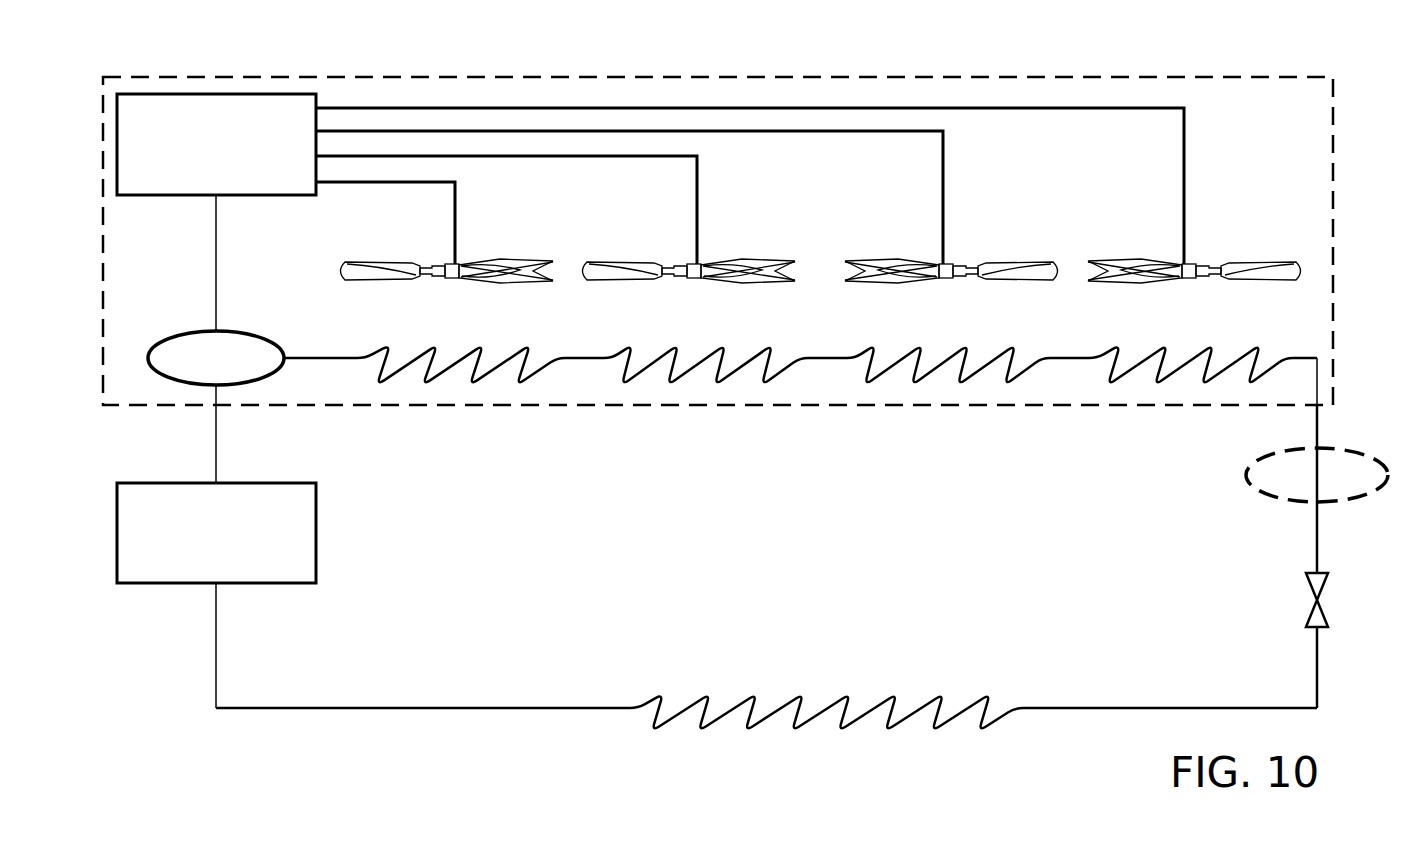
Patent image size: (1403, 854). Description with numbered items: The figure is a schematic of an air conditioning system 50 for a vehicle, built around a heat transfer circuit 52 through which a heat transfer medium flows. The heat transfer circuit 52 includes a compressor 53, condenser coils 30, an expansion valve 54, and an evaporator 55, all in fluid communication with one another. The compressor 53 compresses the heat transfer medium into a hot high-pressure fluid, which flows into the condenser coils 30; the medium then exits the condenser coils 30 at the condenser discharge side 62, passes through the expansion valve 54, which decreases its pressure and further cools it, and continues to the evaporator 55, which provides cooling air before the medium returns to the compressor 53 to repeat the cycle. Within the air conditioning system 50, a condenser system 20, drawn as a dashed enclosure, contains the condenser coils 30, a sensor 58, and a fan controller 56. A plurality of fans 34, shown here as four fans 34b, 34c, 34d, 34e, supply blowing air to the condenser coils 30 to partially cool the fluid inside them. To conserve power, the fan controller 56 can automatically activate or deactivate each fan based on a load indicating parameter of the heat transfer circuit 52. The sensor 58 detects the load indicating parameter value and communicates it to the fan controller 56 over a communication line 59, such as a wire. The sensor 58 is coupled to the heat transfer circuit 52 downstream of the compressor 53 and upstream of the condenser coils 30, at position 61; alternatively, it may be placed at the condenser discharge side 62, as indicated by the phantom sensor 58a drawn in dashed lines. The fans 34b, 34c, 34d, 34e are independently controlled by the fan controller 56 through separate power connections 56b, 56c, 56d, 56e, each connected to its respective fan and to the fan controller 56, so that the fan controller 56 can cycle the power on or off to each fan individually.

The condenser system 20 is at (1227, 77).
The fan controller 56 is at (291, 94).
The power connection 56b is at (458, 224).
The power connection 56c is at (700, 198).
The power connection 56d is at (945, 172).
The power connection 56e is at (1187, 148).
The plurality of fans 34 is at (813, 227).
The fan 34b is at (375, 264).
The fan 34c is at (617, 264).
The fan 34d is at (862, 264).
The fan 34e is at (1105, 264).
The communication line 59 is at (218, 268).
The sensor 58 is at (258, 333).
The condenser coils 30 is at (1157, 343).
The air conditioning system 50 is at (1356, 332).
The position 61 is at (218, 458).
The compressor 53 is at (292, 483).
The phantom sensor 58a is at (1264, 454).
The condenser discharge side 62 is at (1319, 527).
The heat transfer circuit 52 is at (1322, 556).
The expansion valve 54 is at (1324, 610).
The evaporator 55 is at (1003, 725).